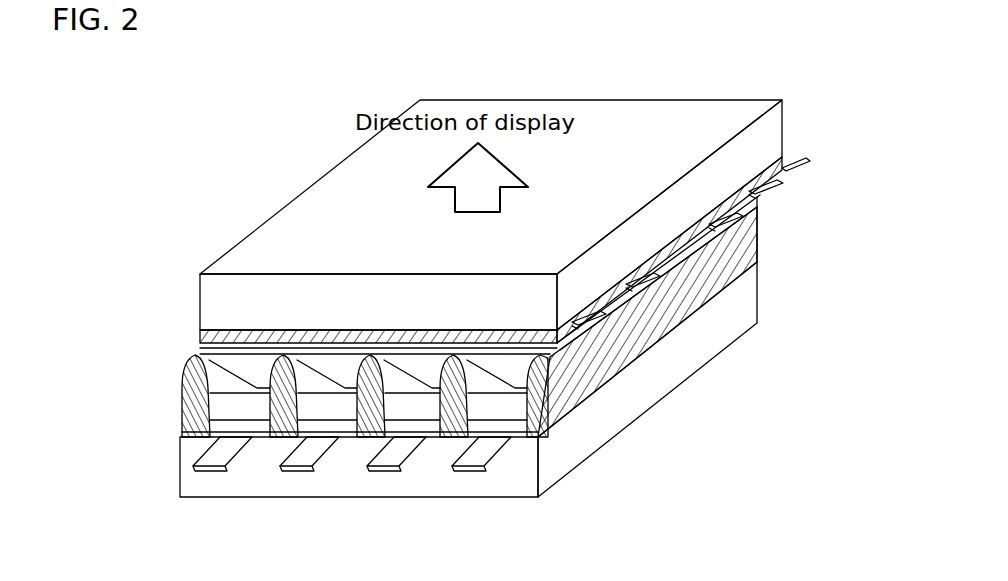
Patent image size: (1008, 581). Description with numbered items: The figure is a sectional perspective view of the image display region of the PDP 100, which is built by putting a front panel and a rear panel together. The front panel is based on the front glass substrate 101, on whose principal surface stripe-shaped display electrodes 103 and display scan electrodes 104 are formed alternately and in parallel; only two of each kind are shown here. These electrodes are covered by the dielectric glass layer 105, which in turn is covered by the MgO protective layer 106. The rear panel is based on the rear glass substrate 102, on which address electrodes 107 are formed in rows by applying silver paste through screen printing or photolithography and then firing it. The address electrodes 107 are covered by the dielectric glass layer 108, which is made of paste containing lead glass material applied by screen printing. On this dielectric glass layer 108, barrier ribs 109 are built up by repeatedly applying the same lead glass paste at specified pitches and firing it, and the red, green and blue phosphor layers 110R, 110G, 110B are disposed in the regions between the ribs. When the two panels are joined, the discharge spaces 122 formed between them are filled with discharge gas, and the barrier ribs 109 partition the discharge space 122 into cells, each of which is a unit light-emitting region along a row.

The PDP 100 is at (765, 293).
The front glass substrate 101 is at (207, 290).
The rear glass substrate 102 is at (432, 490).
The display electrodes 103 is at (607, 293).
The display scan electrodes 104 is at (712, 230).
The dielectric glass layer 105 is at (200, 338).
The MgO protective layer 106 is at (200, 352).
The address electrodes 107 is at (222, 455).
The dielectric glass layer 108 is at (205, 437).
The barrier ribs 109 is at (240, 395).
The red phosphor layer 110R is at (235, 420).
The green phosphor layer 110G is at (323, 427).
The blue phosphor layer 110B is at (412, 428).
The discharge spaces 122 is at (505, 375).